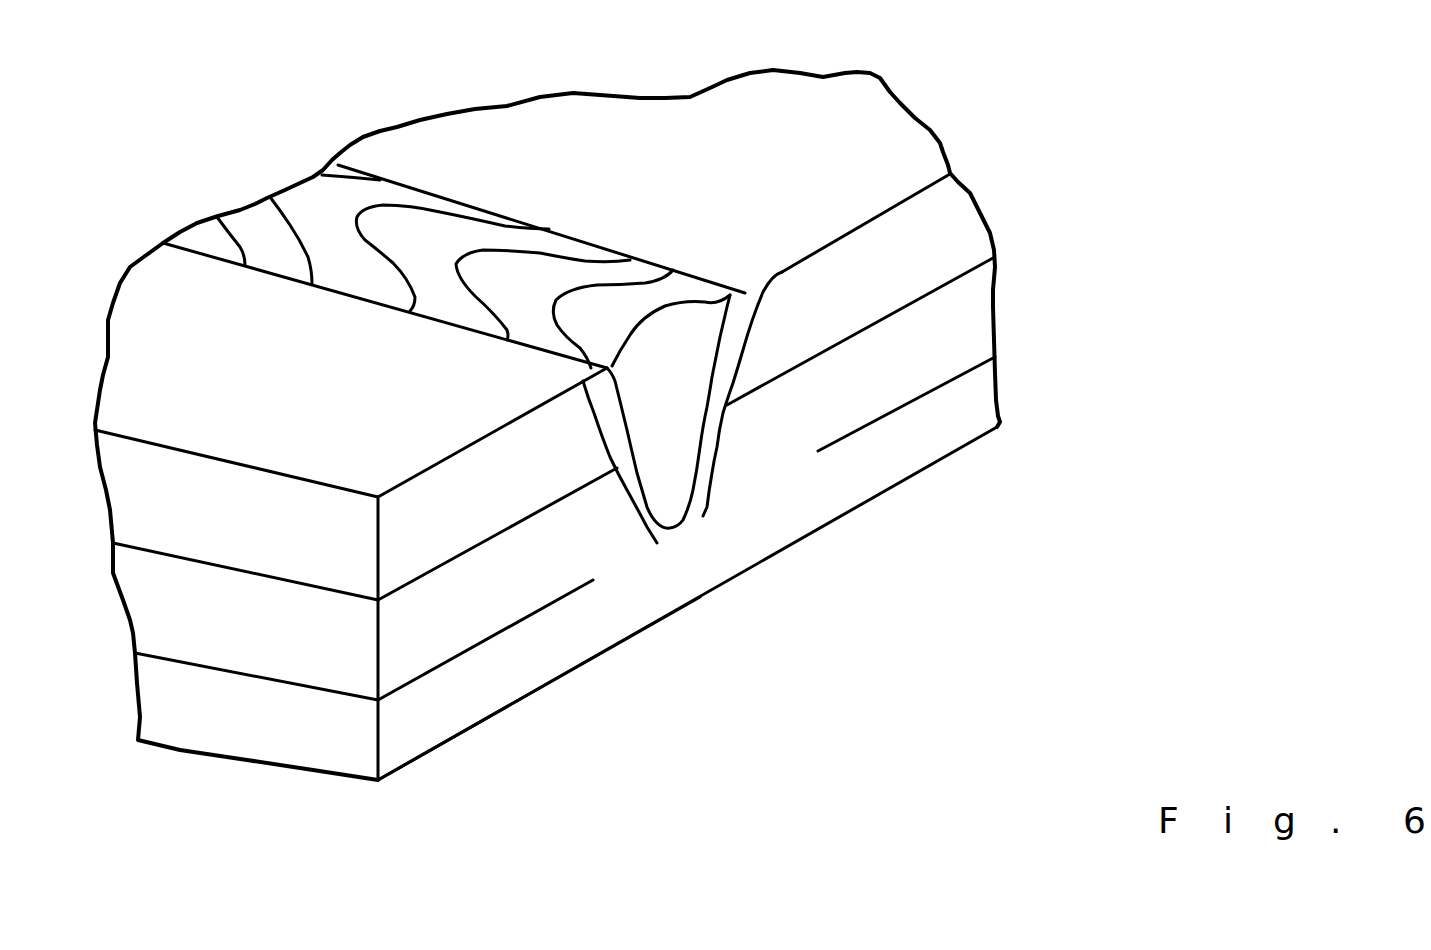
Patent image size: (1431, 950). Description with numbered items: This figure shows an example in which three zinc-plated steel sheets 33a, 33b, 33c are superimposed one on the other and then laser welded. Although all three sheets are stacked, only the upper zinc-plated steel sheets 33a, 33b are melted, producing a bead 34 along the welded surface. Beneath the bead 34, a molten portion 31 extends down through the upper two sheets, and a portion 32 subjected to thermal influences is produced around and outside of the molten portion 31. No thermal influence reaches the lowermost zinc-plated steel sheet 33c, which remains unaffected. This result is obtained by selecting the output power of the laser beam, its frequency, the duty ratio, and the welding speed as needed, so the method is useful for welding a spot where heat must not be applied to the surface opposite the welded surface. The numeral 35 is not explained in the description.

The molten portion 31 is at (674, 494).
The portion subjected to thermal influences 32 is at (718, 437).
The zinc-plated steel sheet 33a is at (972, 247).
The zinc-plated steel sheet 33b is at (977, 313).
The zinc-plated steel sheet 33c is at (977, 402).
The bead 34 is at (458, 232).
The bottom edge of laminate 35 is at (612, 648).